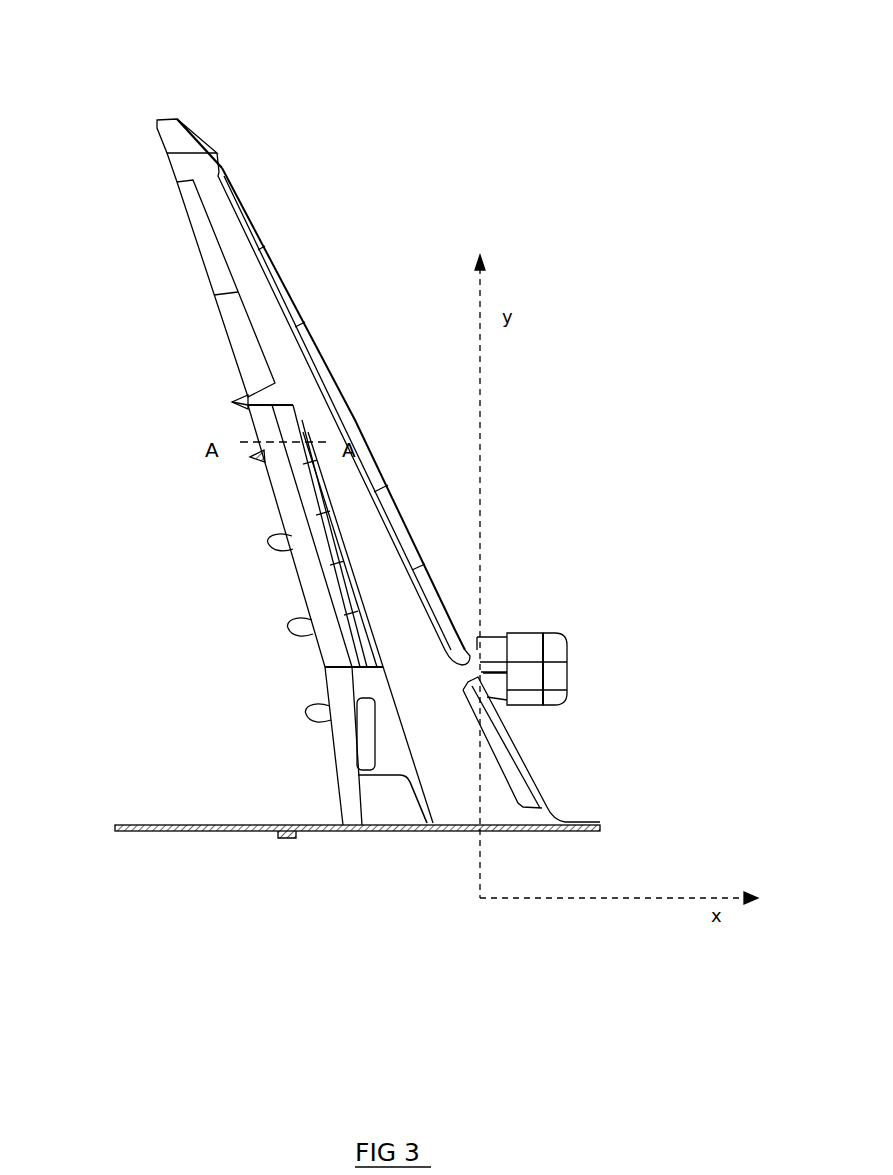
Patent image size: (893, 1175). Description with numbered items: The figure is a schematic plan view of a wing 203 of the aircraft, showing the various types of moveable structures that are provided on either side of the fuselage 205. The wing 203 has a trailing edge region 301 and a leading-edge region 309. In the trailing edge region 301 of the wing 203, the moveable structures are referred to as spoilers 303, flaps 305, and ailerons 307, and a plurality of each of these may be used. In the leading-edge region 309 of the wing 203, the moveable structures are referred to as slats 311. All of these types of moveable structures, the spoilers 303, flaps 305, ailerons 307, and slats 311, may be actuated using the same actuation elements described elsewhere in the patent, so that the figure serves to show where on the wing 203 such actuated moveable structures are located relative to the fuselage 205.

The wing 203 is at (242, 253).
The fuselage 205 is at (276, 858).
The trailing edge region 301 is at (218, 368).
The spoilers 303 is at (303, 400).
The flaps 305 is at (307, 577).
The ailerons 307 is at (248, 370).
The leading-edge region 309 is at (350, 400).
The slats 311 is at (465, 452).